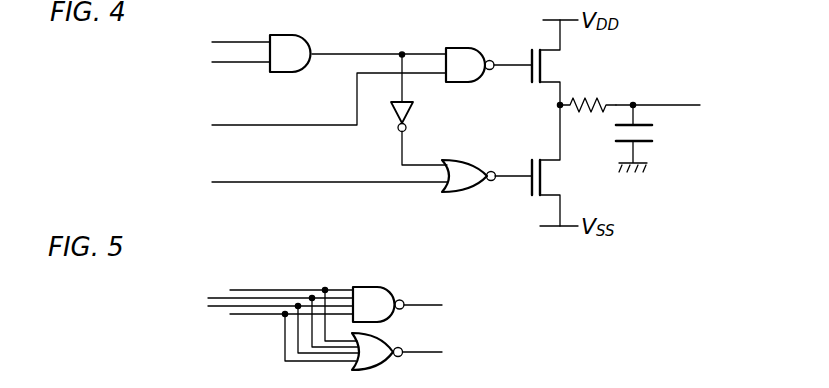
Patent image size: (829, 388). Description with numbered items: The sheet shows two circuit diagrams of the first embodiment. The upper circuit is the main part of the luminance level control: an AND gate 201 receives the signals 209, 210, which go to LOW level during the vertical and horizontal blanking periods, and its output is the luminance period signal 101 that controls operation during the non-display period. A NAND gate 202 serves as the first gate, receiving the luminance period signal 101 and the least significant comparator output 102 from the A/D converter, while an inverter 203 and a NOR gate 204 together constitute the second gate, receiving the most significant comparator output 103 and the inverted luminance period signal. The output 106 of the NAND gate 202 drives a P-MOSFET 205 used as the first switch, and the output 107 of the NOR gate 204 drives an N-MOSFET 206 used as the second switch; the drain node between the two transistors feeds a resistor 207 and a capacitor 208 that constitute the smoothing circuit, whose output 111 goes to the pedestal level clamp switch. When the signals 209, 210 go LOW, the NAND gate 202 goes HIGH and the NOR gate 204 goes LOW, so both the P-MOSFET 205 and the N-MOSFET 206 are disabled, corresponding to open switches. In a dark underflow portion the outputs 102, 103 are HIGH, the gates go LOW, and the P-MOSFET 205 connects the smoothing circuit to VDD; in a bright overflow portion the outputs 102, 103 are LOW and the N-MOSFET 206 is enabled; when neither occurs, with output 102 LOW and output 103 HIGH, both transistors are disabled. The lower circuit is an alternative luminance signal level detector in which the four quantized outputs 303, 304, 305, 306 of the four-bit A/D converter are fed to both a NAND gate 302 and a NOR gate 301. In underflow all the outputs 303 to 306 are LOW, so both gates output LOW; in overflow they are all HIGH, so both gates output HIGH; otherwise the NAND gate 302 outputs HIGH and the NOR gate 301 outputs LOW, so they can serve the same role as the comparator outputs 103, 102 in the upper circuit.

In FIG. 4, the luminance period signal 101 is at (333, 57).
In FIG. 4, the least significant comparator output 102 is at (240, 127).
In FIG. 4, the most significant comparator output 103 is at (240, 184).
In FIG. 4, the first gate output 106 is at (510, 68).
In FIG. 4, the second gate output 107 is at (507, 179).
In FIG. 4, the smoothing circuit output 111 is at (660, 104).
In FIG. 4, the AND gate 201 is at (304, 38).
In FIG. 4, the NAND gate 202 is at (474, 47).
In FIG. 4, the inverter 203 is at (414, 115).
In FIG. 4, the NOR gate 204 is at (473, 160).
In FIG. 4, the P-MOSFET 205 is at (549, 68).
In FIG. 4, the N-MOSFET 206 is at (547, 178).
In FIG. 4, the resistor 207 is at (590, 99).
In FIG. 4, the capacitor 208 is at (655, 133).
In FIG. 4, the vertical blanking period signal 209 is at (244, 41).
In FIG. 4, the horizontal blanking period signal 210 is at (244, 63).
In FIG. 5, the NOR gate 301 is at (384, 337).
In FIG. 5, the NAND gate 302 is at (386, 290).
In FIG. 5, the quantized output 303 is at (262, 289).
In FIG. 5, the quantized output 304 is at (234, 298).
In FIG. 5, the quantized output 305 is at (234, 307).
In FIG. 5, the quantized output 306 is at (262, 316).